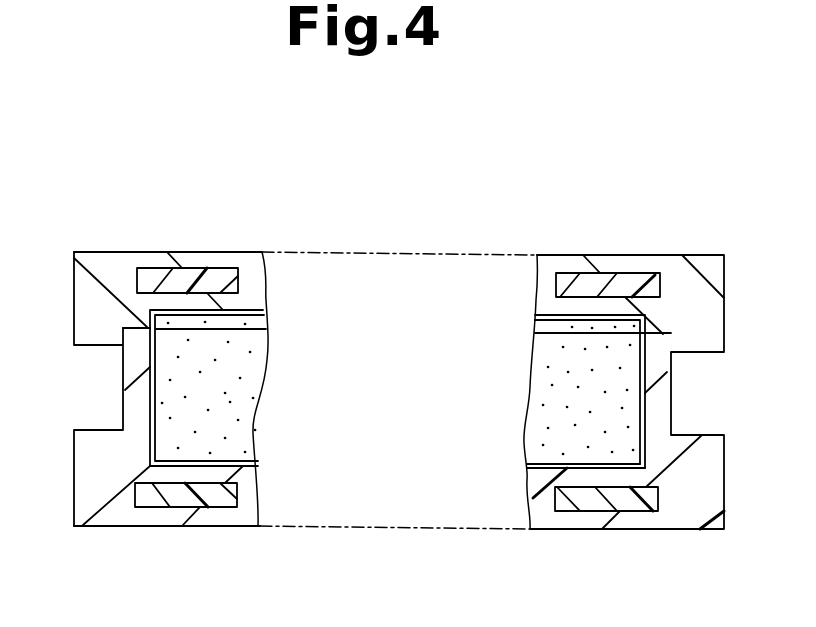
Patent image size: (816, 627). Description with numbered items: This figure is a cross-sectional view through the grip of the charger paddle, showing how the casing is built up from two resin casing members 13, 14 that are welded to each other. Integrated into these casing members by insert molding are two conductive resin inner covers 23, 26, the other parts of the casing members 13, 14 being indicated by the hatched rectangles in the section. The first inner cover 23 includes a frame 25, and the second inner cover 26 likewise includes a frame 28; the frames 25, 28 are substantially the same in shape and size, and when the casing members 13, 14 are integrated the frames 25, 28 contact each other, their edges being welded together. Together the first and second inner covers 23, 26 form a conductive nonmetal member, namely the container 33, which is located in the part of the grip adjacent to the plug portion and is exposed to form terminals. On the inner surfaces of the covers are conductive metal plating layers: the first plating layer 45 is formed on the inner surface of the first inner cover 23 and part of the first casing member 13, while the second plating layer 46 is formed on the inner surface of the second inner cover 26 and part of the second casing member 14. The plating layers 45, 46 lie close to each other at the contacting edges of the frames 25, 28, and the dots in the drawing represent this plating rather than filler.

The first resin casing member 13 is at (242, 527).
The second resin casing member 14 is at (247, 252).
The first inner cover 23 is at (75, 461).
The frame 25 is at (660, 397).
The second inner cover 26 is at (88, 252).
The frame 28 is at (643, 327).
The container 33 is at (147, 171).
The first conductive metal plating layer 45 is at (572, 467).
The second conductive metal plating layer 46 is at (560, 333).